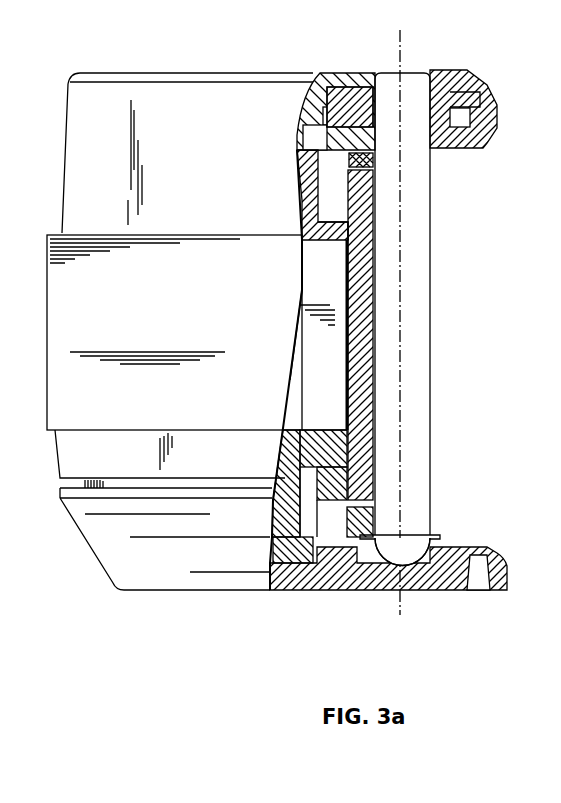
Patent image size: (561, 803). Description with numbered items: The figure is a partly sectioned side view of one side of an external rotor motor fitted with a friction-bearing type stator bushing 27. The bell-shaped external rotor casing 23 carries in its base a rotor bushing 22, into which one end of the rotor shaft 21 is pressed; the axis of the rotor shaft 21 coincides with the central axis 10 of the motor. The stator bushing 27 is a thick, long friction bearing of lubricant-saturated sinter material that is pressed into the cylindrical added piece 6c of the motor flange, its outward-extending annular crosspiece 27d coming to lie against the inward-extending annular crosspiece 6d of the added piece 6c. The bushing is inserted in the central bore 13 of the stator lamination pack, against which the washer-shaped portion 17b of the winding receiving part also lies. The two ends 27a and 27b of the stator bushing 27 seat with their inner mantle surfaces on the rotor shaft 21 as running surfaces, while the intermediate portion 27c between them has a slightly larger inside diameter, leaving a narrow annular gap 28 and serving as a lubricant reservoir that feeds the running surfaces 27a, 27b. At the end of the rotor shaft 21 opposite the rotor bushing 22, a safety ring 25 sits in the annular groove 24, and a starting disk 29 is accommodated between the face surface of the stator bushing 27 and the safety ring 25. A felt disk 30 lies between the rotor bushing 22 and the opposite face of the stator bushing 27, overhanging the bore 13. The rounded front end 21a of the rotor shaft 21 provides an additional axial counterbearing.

The central axis 10 is at (398, 60).
The central bore 13 is at (342, 300).
The washer-shaped portion 17b is at (330, 228).
The rotor shaft 21 is at (345, 352).
The rounded front end 21a is at (412, 565).
The rotor bushing 22 is at (447, 78).
The external rotor casing 23 is at (195, 84).
The annular groove 24 is at (383, 558).
The safety ring 25 is at (345, 571).
The stator bushing 27 is at (350, 396).
The end of stator bushing 27a is at (340, 416).
The end of stator bushing 27b is at (373, 200).
The intermediate portion 27c is at (380, 338).
The annular crosspiece 27d is at (317, 500).
The annular gap 28 is at (330, 376).
The starting disk 29 is at (343, 528).
The felt disk 30 is at (340, 157).
The cylindrical added piece 6c is at (322, 481).
The annular crosspiece 6d is at (318, 447).